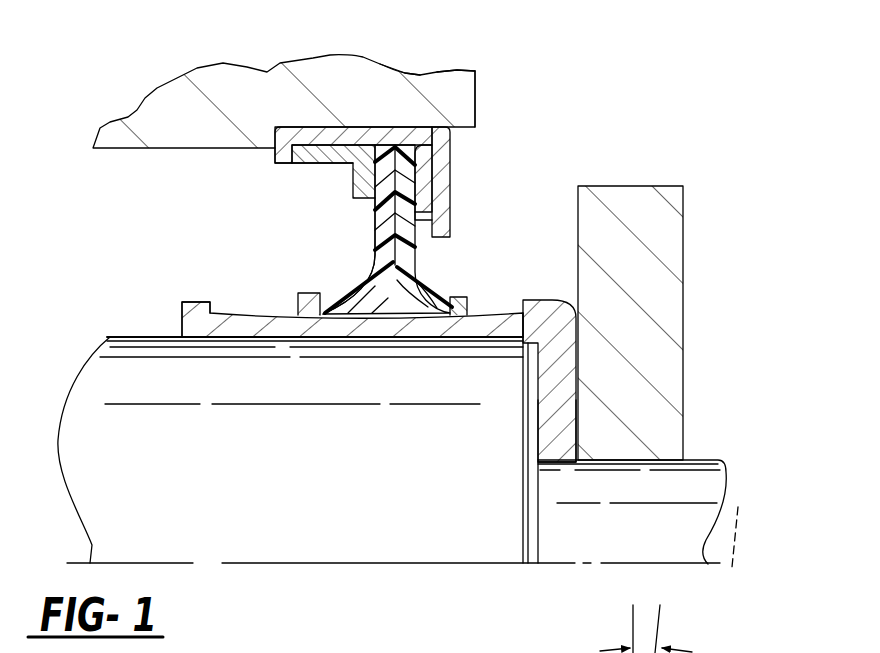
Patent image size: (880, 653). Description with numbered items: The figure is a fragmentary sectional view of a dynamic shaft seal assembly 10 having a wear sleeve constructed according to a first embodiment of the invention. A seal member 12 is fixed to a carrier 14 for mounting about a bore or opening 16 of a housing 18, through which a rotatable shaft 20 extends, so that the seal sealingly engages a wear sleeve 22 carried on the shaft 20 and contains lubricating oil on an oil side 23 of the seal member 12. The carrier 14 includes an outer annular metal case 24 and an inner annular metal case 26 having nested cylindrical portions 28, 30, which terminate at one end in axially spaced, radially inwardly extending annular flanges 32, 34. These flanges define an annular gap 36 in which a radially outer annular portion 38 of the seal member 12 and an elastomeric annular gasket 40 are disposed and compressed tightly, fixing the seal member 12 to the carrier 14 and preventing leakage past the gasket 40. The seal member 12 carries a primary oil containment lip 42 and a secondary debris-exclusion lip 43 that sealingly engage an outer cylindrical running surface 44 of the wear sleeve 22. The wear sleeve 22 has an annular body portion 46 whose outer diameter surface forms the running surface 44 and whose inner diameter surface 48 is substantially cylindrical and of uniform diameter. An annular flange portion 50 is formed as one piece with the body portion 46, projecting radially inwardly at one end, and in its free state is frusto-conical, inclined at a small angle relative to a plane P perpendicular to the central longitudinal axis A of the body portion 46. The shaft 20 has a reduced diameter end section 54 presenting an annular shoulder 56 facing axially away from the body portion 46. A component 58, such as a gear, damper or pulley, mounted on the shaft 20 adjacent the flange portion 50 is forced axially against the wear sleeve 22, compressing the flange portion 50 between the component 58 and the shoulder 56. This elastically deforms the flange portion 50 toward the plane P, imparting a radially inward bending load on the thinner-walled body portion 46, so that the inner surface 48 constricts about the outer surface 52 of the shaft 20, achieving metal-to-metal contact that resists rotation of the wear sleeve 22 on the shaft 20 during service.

The dynamic shaft seal assembly 10 is at (601, 142).
The seal member 12 is at (302, 255).
The carrier 14 is at (280, 118).
The bore or opening 16 is at (476, 130).
The housing 18 is at (403, 70).
The rotatable shaft 20 is at (97, 383).
The wear sleeve 22 is at (180, 300).
The oil side 23 is at (286, 163).
The outer annular metal case 24 is at (394, 138).
The inner annular metal case 26 is at (323, 165).
The cylindrical portion of outer case 28 is at (323, 135).
The cylindrical portion of inner case 30 is at (302, 164).
The annular flange of outer case 32 is at (449, 157).
The annular flange of inner case 34 is at (360, 180).
The annular gap 36 is at (423, 216).
The radially outer annular portion 38 is at (457, 68).
The elastomeric annular gasket 40 is at (428, 188).
The primary oil containment lip 42 is at (313, 298).
The secondary debris-exclusion lip 43 is at (444, 300).
The outer cylindrical running surface 44 is at (260, 313).
The annular body portion 46 is at (367, 332).
The inner diameter surface 48 is at (277, 338).
The annular flange portion 50 is at (573, 345).
The outer surface of shaft 52 is at (143, 336).
The reduced diameter end section 54 is at (704, 458).
The annular step or shoulder 56 is at (547, 437).
The component 58 is at (684, 242).
The central longitudinal axis A is at (738, 513).
The plane P is at (631, 625).